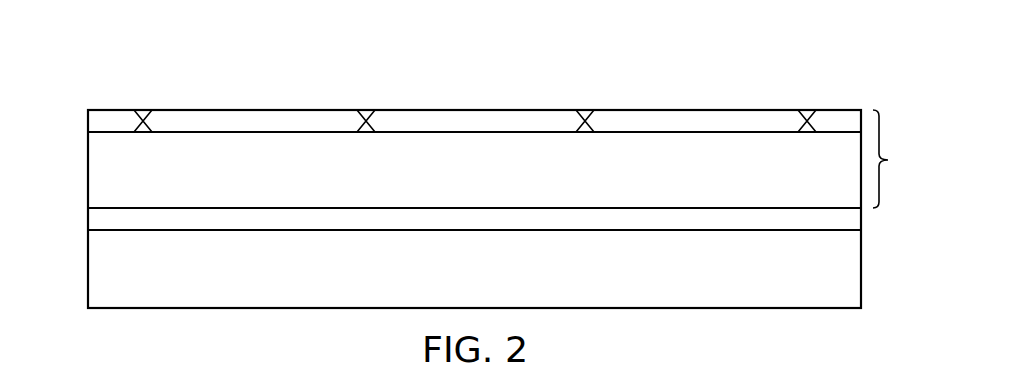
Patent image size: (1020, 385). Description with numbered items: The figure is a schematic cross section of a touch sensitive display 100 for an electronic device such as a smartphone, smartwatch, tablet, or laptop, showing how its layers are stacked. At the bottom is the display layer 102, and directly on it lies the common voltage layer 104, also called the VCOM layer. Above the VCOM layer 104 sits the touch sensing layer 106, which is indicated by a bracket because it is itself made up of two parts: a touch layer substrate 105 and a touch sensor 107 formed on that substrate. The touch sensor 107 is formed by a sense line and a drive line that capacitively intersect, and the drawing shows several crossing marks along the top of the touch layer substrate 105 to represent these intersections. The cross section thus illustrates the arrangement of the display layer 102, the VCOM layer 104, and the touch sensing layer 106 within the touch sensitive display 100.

The touch sensitive display 100 is at (663, 71).
The display layer 102 is at (97, 270).
The common voltage layer 104 is at (97, 220).
The touch layer substrate 105 is at (97, 170).
The touch sensing layer 106 is at (904, 159).
The touch sensor 107 is at (97, 120).